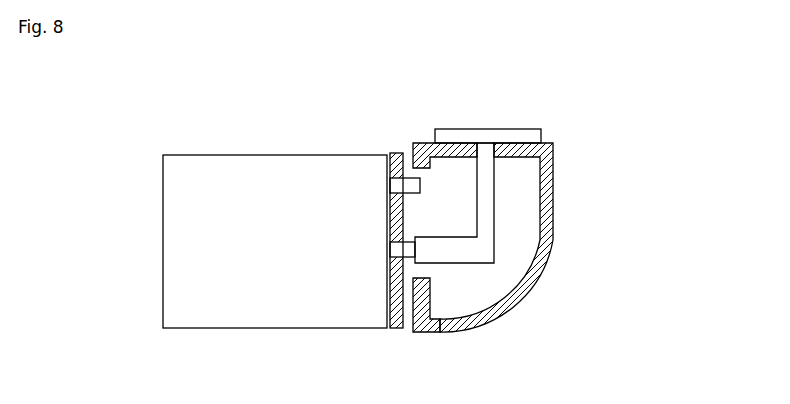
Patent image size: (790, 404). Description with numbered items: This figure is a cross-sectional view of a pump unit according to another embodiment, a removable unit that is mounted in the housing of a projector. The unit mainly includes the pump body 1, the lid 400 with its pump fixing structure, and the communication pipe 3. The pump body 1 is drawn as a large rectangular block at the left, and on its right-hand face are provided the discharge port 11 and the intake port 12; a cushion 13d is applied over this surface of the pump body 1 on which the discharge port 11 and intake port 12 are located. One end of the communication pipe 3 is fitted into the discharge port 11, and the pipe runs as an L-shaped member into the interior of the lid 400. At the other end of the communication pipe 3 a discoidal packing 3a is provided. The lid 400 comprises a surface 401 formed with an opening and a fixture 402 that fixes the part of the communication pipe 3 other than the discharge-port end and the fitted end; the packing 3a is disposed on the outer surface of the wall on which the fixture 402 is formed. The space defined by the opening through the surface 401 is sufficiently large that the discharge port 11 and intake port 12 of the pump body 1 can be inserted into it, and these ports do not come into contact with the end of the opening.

The pump body 1 is at (285, 162).
The discharge port 11 is at (407, 258).
The intake port 12 is at (408, 177).
The cushion 13d is at (392, 153).
The communication pipe 3 is at (494, 212).
The packing 3a is at (458, 129).
The lid 400 is at (553, 193).
The surface 401 is at (430, 308).
The fixture 402 is at (503, 143).